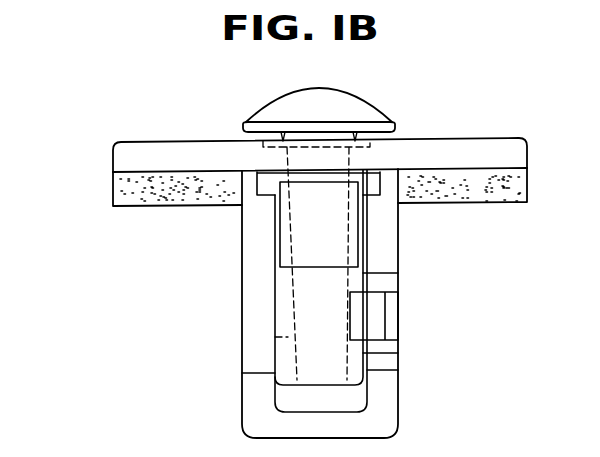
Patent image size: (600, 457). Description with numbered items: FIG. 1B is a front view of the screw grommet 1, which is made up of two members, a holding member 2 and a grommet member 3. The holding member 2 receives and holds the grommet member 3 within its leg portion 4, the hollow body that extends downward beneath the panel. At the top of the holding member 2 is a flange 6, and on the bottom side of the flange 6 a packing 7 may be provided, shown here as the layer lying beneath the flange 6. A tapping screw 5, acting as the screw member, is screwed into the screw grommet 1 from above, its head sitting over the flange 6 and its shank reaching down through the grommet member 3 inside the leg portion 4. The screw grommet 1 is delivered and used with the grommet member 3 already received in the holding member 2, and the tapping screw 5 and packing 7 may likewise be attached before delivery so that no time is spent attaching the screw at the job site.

The screw grommet 1 is at (78, 222).
The holding member 2 is at (110, 155).
The grommet member 3 is at (298, 304).
The leg portion 4 is at (383, 245).
The tapping screw 5 is at (358, 106).
The flange 6 is at (478, 158).
The packing 7 is at (472, 187).